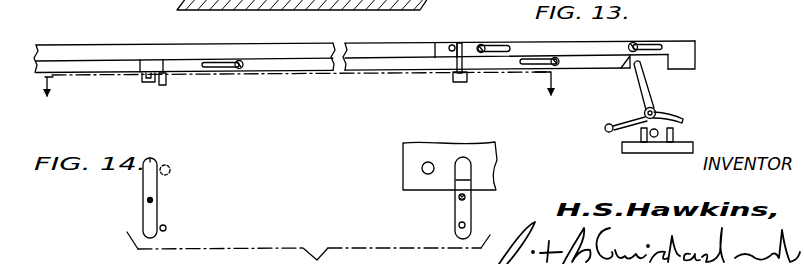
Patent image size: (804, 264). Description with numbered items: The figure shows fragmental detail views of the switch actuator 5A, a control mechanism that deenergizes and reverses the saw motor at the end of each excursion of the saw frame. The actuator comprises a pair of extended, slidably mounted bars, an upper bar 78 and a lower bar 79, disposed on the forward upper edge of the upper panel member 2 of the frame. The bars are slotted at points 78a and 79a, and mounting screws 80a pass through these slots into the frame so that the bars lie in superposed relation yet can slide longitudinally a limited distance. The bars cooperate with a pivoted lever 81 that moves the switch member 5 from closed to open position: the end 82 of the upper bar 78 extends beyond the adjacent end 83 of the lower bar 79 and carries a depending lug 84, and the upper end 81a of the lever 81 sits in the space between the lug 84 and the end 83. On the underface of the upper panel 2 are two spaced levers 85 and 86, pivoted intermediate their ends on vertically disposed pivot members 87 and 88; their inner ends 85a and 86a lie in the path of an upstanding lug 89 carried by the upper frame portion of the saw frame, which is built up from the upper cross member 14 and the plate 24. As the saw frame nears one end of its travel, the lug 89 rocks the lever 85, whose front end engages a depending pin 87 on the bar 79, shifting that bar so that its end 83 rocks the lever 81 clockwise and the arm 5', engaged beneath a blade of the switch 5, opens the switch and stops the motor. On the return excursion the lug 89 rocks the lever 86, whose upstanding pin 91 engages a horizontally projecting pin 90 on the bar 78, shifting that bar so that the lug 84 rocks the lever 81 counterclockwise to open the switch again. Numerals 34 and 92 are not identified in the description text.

In FIG. 13, the upper panel member 2 is at (83, 67).
In FIG. 13, the switch member 5 is at (676, 132).
In FIG. 13, the arm of switch 5' is at (601, 147).
In FIG. 13, the switch actuator 5A is at (350, 77).
In FIG. 13, the upper cross member 14 is at (297, 90).
In FIG. 14, the plate 24 is at (417, 175).
In FIG. 13, the hatched frame member 34 is at (307, 0).
In FIG. 13, the upper bar 78 is at (440, 43).
In FIG. 13, the slot of upper bar 78a is at (500, 52).
In FIG. 13, the lower bar 79 is at (305, 65).
In FIG. 13, the slot of lower bar 79a is at (218, 61).
In FIG. 13, the mounting screw 80a is at (240, 67).
In FIG. 13, the pivoted lever 81 is at (652, 92).
In FIG. 13, the upper end of lever 81a is at (637, 82).
In FIG. 13, the end of upper bar 82 is at (694, 43).
In FIG. 13, the end of lower bar 83 is at (627, 63).
In FIG. 13, the depending lug 84 is at (672, 62).
In FIG. 13, the pivoted lever 85 is at (150, 83).
In FIG. 14, the pivoted lever 85 is at (146, 182).
In FIG. 14, the inner end of lever 85a is at (157, 160).
In FIG. 13, the pivoted lever 86 is at (456, 80).
In FIG. 14, the pivoted lever 86 is at (459, 180).
In FIG. 14, the inner end of lever 86a is at (466, 165).
In FIG. 14, the pivot member 87 is at (153, 200).
In FIG. 14, the pivot member 88 is at (466, 197).
In FIG. 14, the upstanding lug 89 is at (171, 170).
In FIG. 13, the horizontally projecting pin 90 is at (451, 51).
In FIG. 13, the upstanding pin 91 is at (163, 72).
In FIG. 14, the upstanding pin 91 is at (166, 226).
In FIG. 13, the pin 92 is at (460, 43).
In FIG. 14, the pin 92 is at (459, 226).